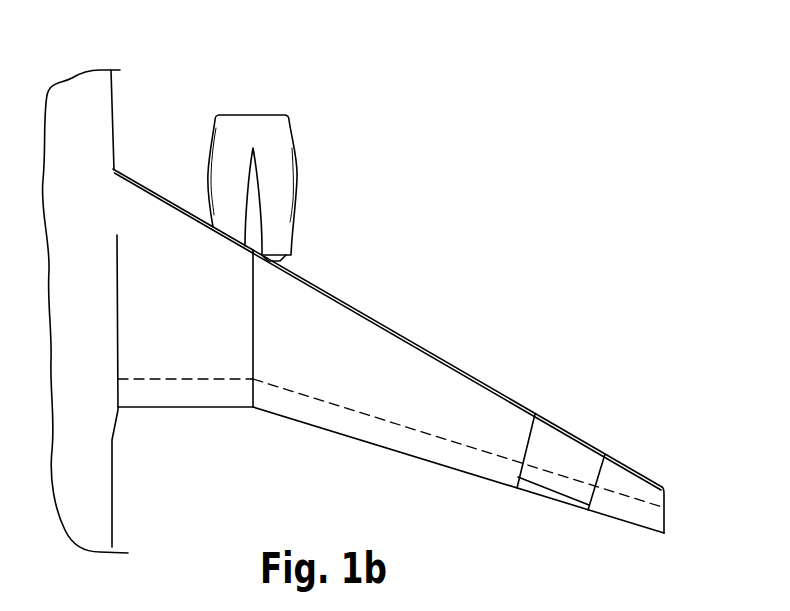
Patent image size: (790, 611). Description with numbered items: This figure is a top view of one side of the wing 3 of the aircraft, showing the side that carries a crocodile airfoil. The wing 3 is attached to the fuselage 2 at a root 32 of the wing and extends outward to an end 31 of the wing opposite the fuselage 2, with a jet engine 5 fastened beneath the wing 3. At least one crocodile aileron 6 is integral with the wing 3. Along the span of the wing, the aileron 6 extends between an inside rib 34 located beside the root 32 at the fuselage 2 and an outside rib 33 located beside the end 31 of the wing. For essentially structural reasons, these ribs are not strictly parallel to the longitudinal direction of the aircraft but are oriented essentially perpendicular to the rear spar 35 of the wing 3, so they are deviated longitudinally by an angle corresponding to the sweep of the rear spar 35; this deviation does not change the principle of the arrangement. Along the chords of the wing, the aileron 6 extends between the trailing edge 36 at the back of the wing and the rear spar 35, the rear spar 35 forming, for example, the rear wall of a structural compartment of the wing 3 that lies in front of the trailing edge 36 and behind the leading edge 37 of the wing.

The fuselage 2 is at (83, 112).
The wing 3 is at (176, 392).
The jet engines 5 is at (268, 137).
The crocodile aileron 6 is at (558, 492).
The end of the wing 31 is at (665, 504).
The root of the wing 32 is at (117, 235).
The outside rib 33 is at (602, 466).
The inside rib 34 is at (528, 438).
The rear spar 35 is at (435, 437).
The trailing edge 36 is at (337, 435).
The leading edge 37 is at (352, 305).